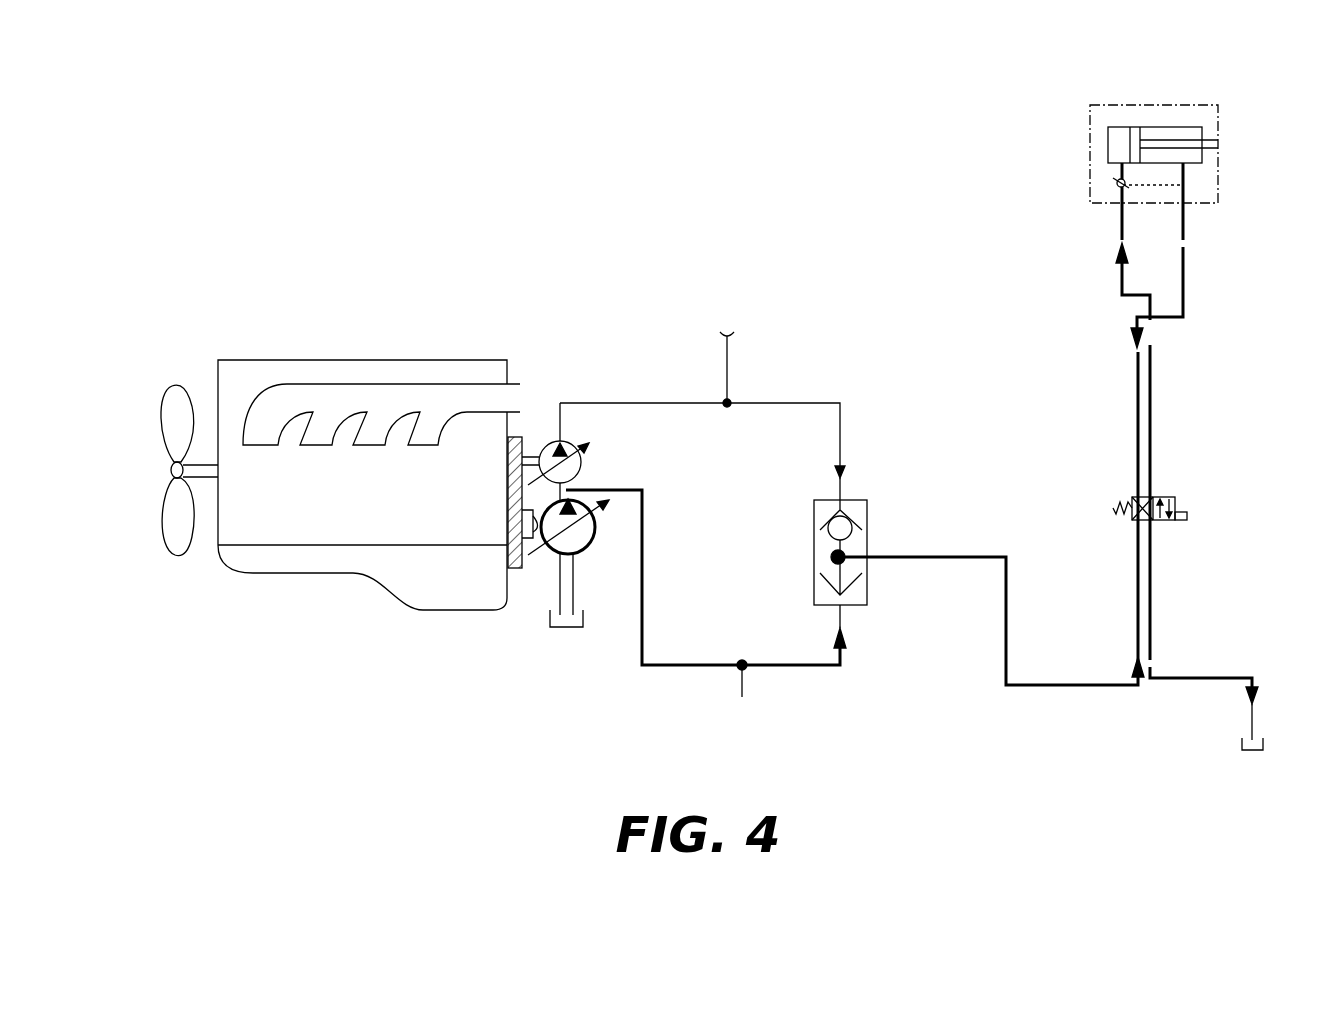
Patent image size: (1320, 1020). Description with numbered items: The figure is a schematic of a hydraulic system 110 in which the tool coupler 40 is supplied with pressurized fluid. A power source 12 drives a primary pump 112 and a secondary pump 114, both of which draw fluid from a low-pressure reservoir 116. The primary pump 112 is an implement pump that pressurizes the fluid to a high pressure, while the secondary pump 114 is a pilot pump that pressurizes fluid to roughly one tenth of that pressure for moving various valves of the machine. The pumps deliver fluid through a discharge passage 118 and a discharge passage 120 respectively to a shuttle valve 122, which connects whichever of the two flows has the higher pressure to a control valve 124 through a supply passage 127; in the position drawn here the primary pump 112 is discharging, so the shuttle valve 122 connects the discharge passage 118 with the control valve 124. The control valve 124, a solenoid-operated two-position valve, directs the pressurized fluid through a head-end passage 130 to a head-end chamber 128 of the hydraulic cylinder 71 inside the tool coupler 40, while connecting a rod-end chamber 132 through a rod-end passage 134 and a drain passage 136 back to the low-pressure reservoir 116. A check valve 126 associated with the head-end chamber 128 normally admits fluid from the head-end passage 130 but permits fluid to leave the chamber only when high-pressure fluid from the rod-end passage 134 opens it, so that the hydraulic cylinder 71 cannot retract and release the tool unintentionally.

The hydraulic system 110 is at (573, 180).
The power source 12 is at (370, 505).
The secondary pump 114 is at (582, 463).
The primary pump 112 is at (592, 550).
The low-pressure reservoir 116 is at (550, 617).
The discharge passage 118 is at (690, 665).
The discharge passage 120 is at (775, 403).
The shuttle valve 122 is at (867, 510).
The supply passage 127 is at (1008, 600).
The control valve 124 is at (1183, 476).
The head-end passage 130 is at (1122, 296).
The rod-end passage 134 is at (1185, 300).
The drain passage 136 is at (1153, 602).
The tool coupler 40 is at (1182, 105).
The hydraulic cylinder 71 is at (1206, 117).
The head-end chamber 128 is at (1120, 142).
The rod-end chamber 132 is at (1188, 153).
The check valve 126 is at (1115, 185).